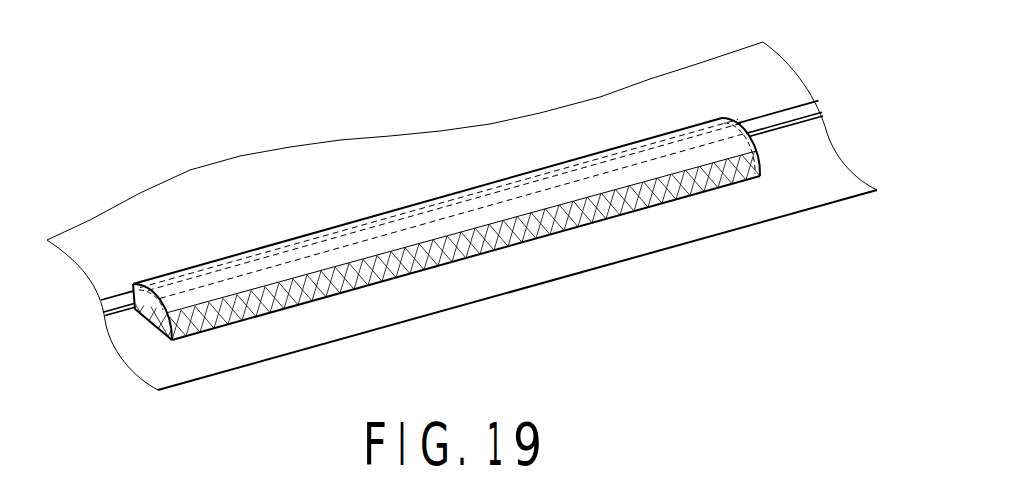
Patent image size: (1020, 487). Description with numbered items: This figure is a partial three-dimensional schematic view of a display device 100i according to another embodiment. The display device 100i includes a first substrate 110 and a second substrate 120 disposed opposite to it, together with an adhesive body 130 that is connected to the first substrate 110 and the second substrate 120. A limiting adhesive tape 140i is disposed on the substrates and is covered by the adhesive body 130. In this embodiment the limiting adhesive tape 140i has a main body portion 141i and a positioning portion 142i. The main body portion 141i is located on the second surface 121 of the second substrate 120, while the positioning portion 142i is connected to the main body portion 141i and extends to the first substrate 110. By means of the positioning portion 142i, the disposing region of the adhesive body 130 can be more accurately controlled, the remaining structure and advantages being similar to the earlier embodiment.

The display device 100i is at (95, 57).
The first substrate 110 is at (727, 70).
The second substrate 120 is at (790, 159).
The second surface 121 is at (793, 188).
The adhesive body 130 is at (547, 237).
The limiting adhesive tape 140i is at (233, 110).
The main body portion 141i is at (232, 300).
The positioning portion 142i is at (158, 278).